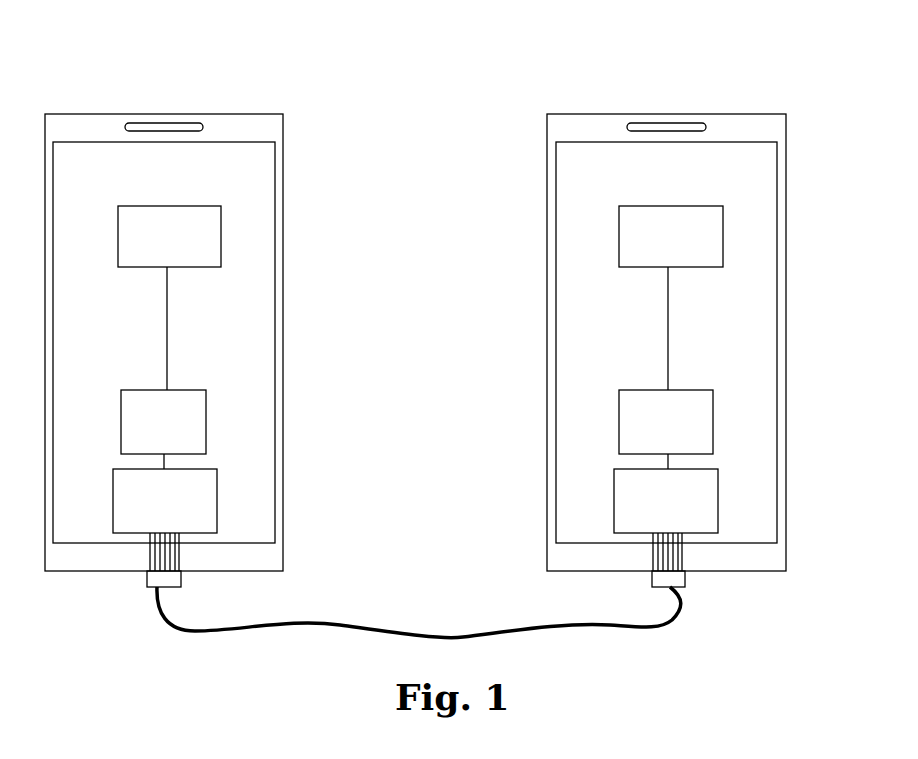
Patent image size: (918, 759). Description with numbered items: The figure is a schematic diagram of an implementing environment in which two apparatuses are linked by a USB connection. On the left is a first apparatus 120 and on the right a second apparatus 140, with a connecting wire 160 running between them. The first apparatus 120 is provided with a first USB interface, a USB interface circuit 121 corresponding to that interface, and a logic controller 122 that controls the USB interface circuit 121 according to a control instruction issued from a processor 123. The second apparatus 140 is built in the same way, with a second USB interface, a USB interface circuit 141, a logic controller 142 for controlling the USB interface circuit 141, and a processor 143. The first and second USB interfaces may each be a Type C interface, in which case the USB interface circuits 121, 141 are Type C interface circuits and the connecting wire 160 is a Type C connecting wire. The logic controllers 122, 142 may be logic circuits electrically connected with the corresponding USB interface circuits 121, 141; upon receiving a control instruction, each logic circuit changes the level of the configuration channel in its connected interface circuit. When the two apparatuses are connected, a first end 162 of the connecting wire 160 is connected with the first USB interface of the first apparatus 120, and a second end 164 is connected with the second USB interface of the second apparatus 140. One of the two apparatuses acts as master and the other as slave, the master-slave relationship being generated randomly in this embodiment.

The first apparatus 120 is at (184, 339).
The USB interface circuit 121 is at (217, 487).
The logic controller 122 is at (206, 418).
The processor 123 is at (221, 218).
The second apparatus 140 is at (689, 339).
The USB interface circuit 141 is at (718, 487).
The logic controller 142 is at (713, 418).
The processor 143 is at (723, 218).
The connecting wire 160 is at (363, 627).
The first end 162 is at (150, 589).
The second end 164 is at (685, 588).